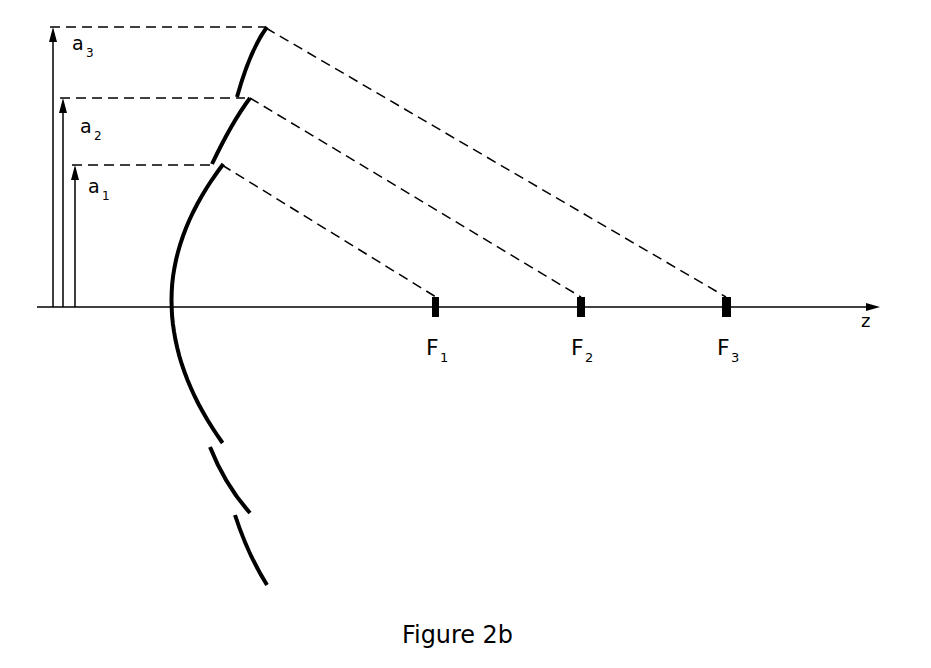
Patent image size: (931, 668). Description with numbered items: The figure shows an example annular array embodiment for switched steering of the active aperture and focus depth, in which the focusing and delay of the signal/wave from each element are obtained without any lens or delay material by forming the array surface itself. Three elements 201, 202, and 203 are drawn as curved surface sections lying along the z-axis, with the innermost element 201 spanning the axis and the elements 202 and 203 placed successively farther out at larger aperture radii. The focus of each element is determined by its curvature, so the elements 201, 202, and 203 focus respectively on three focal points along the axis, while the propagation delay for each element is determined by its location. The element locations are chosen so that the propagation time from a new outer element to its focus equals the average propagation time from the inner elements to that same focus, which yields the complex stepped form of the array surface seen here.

The transducer element 201 is at (201, 374).
The transducer element 202 is at (216, 131).
The transducer element 203 is at (229, 62).